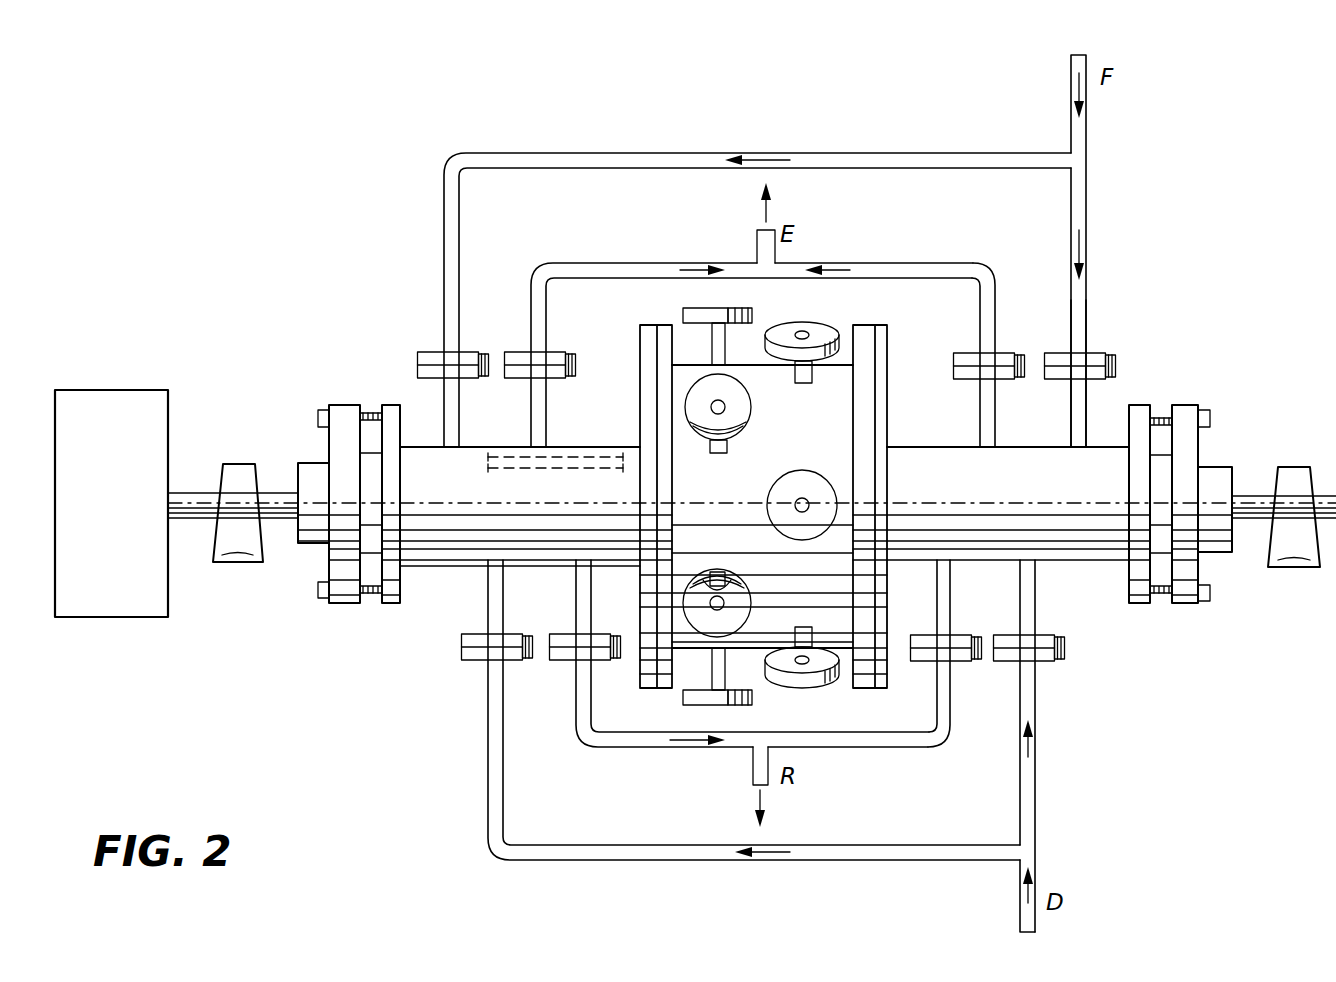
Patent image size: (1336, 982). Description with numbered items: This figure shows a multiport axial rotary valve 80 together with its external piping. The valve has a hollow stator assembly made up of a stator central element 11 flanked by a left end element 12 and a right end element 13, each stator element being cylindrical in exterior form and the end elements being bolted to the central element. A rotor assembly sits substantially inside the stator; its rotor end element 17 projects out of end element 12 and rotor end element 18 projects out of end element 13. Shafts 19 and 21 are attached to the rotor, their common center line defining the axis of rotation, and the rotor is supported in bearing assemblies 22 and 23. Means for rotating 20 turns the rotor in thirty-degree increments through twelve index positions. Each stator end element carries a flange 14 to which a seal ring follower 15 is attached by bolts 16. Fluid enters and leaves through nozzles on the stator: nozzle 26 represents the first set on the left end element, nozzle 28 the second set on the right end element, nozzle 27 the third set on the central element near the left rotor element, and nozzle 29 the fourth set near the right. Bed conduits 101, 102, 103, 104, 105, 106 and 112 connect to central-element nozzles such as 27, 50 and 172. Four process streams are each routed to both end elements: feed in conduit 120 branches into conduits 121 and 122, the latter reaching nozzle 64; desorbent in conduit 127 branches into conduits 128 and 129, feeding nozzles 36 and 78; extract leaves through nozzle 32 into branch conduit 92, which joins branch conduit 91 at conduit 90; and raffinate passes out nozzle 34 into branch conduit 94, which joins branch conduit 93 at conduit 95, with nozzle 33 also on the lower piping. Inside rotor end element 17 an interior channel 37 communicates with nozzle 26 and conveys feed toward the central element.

The stator central element 11 is at (697, 366).
The stator end element 12 is at (577, 447).
The stator end element 13 is at (1010, 448).
The flange 14 is at (393, 404).
The seal ring follower 15 is at (344, 404).
The bolt 16 is at (367, 600).
The rotor end element 17 is at (312, 462).
The rotor end element 18 is at (1210, 467).
The shaft 19 is at (182, 493).
The means for rotating the rotor assembly 20 is at (119, 392).
The shaft 21 is at (1240, 496).
The bearing assembly 22 is at (243, 565).
The bearing assembly 23 is at (1306, 568).
The nozzle 26 is at (462, 422).
The nozzle 27 is at (745, 350).
The nozzle 28 is at (978, 398).
The nozzle 29 is at (832, 612).
The nozzle 32 is at (547, 422).
The nozzle 33 is at (953, 600).
The nozzle 34 is at (590, 612).
The nozzle 36 is at (505, 600).
The interior channel 37 is at (490, 470).
The nozzle 50 is at (712, 673).
The nozzle 64 is at (1087, 415).
The nozzle 78 is at (1040, 603).
The valve 80 is at (468, 566).
The extract conduit 90 is at (757, 248).
The extract branch conduit 91 is at (952, 264).
The extract branch conduit 92 is at (596, 265).
The raffinate branch conduit 93 is at (952, 708).
The raffinate branch conduit 94 is at (578, 700).
The raffinate conduit 95 is at (753, 778).
The conduit 101 is at (802, 683).
The conduit 102 is at (717, 603).
The conduit 103 is at (795, 500).
The conduit 104 is at (718, 413).
The conduit 105 is at (802, 340).
The conduit 106 is at (717, 324).
The conduit 112 is at (717, 690).
The feed conduit 120 is at (1088, 138).
The feed branch conduit 121 is at (853, 152).
The feed branch conduit 122 is at (1088, 208).
The desorbent conduit 127 is at (1018, 893).
The desorbent branch conduit 128 is at (1038, 712).
The desorbent branch conduit 129 is at (505, 806).
The nozzle 172 is at (735, 578).